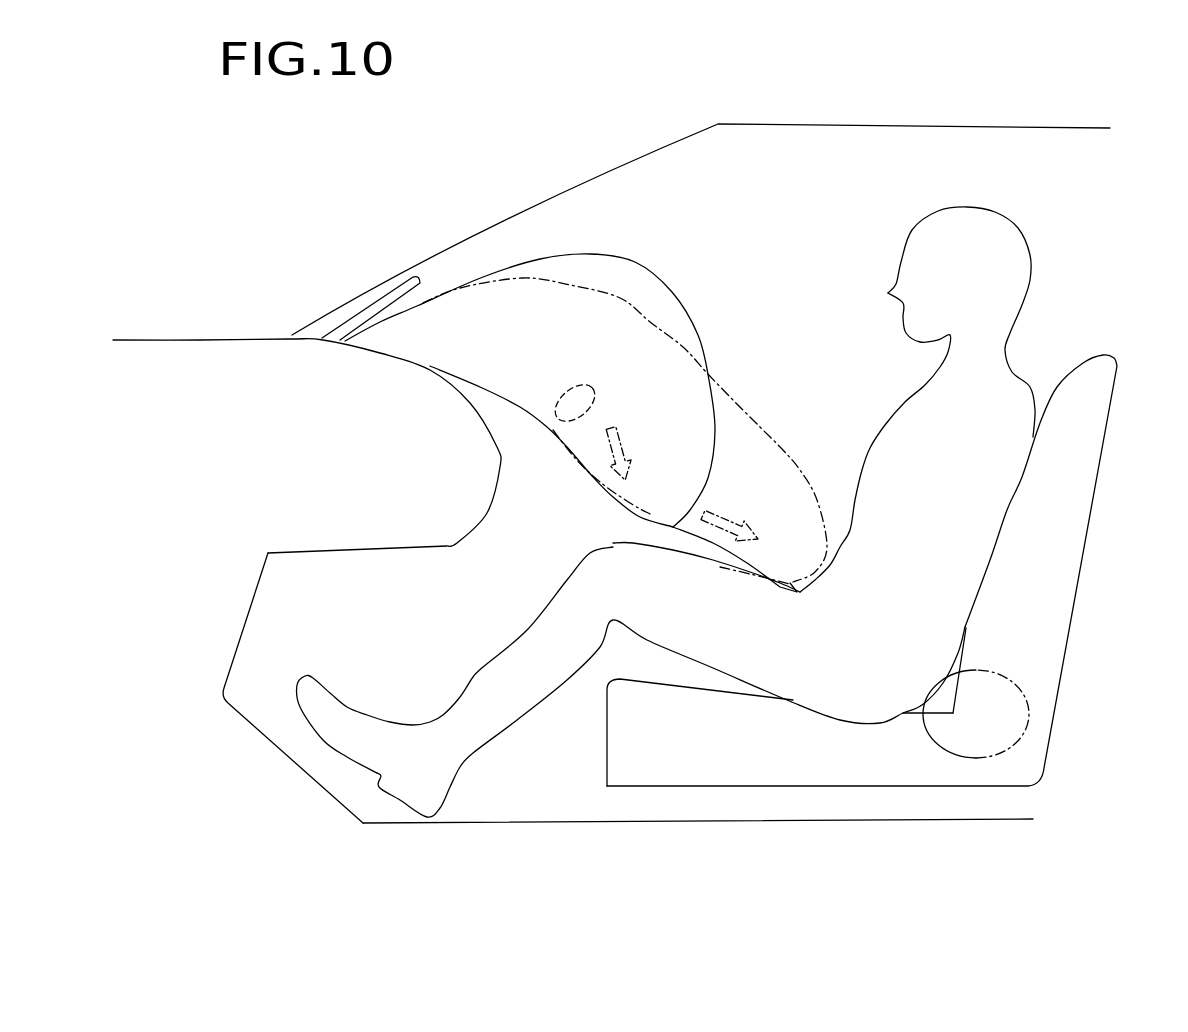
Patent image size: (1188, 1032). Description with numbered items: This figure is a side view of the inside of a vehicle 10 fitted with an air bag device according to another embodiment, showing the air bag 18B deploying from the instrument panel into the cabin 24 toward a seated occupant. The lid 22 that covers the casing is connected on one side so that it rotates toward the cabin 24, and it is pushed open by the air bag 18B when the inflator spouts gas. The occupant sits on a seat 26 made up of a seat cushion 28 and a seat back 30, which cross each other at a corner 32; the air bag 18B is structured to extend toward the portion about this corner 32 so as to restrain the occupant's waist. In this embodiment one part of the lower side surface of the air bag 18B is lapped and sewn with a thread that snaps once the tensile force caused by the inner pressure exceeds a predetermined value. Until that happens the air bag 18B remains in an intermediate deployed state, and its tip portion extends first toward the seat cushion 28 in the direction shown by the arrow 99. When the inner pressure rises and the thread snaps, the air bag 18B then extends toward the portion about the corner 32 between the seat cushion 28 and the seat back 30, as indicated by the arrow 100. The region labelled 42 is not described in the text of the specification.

The vehicle 10 is at (880, 100).
The air bag 18B is at (668, 271).
The lid 22 is at (421, 280).
The cabin 24 is at (835, 223).
The seat 26 is at (700, 797).
The seat cushion 28 is at (798, 767).
The seat back 30 is at (1070, 548).
The corner 32 is at (1037, 693).
The lap of occupant 42 is at (880, 650).
The arrow 99 is at (627, 447).
The arrow 100 is at (743, 512).